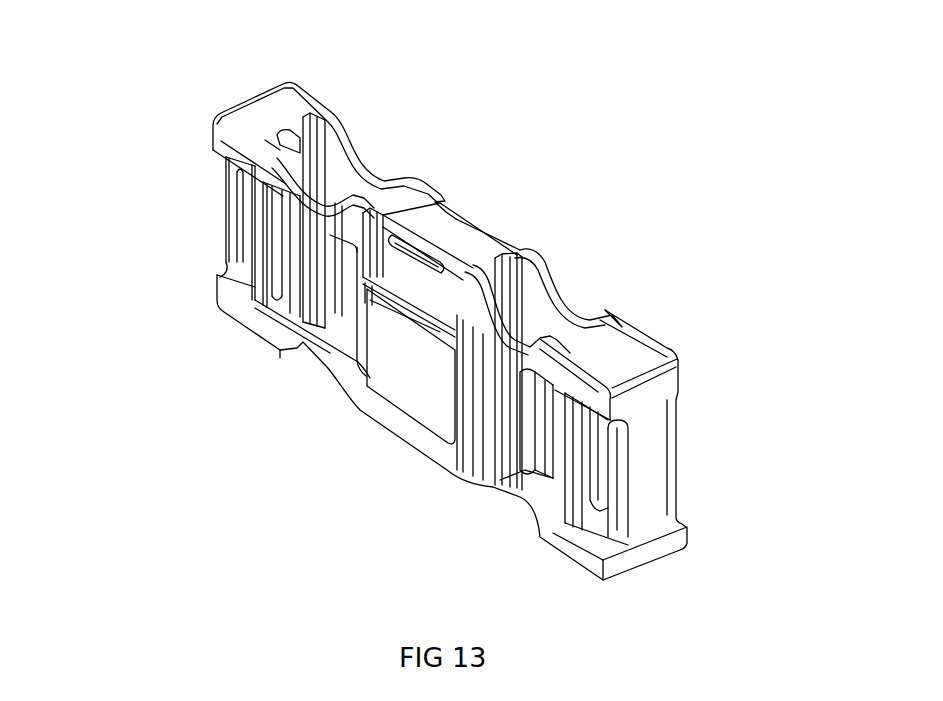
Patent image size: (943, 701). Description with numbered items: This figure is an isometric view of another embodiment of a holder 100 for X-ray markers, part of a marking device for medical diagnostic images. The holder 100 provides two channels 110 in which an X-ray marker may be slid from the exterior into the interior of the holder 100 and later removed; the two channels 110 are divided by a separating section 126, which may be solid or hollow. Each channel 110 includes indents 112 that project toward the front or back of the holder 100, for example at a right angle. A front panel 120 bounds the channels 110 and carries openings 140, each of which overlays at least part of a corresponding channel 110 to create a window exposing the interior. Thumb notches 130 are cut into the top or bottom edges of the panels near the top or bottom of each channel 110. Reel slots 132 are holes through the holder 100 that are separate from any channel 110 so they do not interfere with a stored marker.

The holder 100 is at (175, 329).
The channel 110 is at (272, 118).
The indent 112 is at (320, 108).
The front panel 120 is at (378, 436).
The separating section 126 is at (460, 226).
The thumb notch 130 is at (386, 141).
The reel slot 132 is at (238, 227).
The opening 140 is at (300, 340).